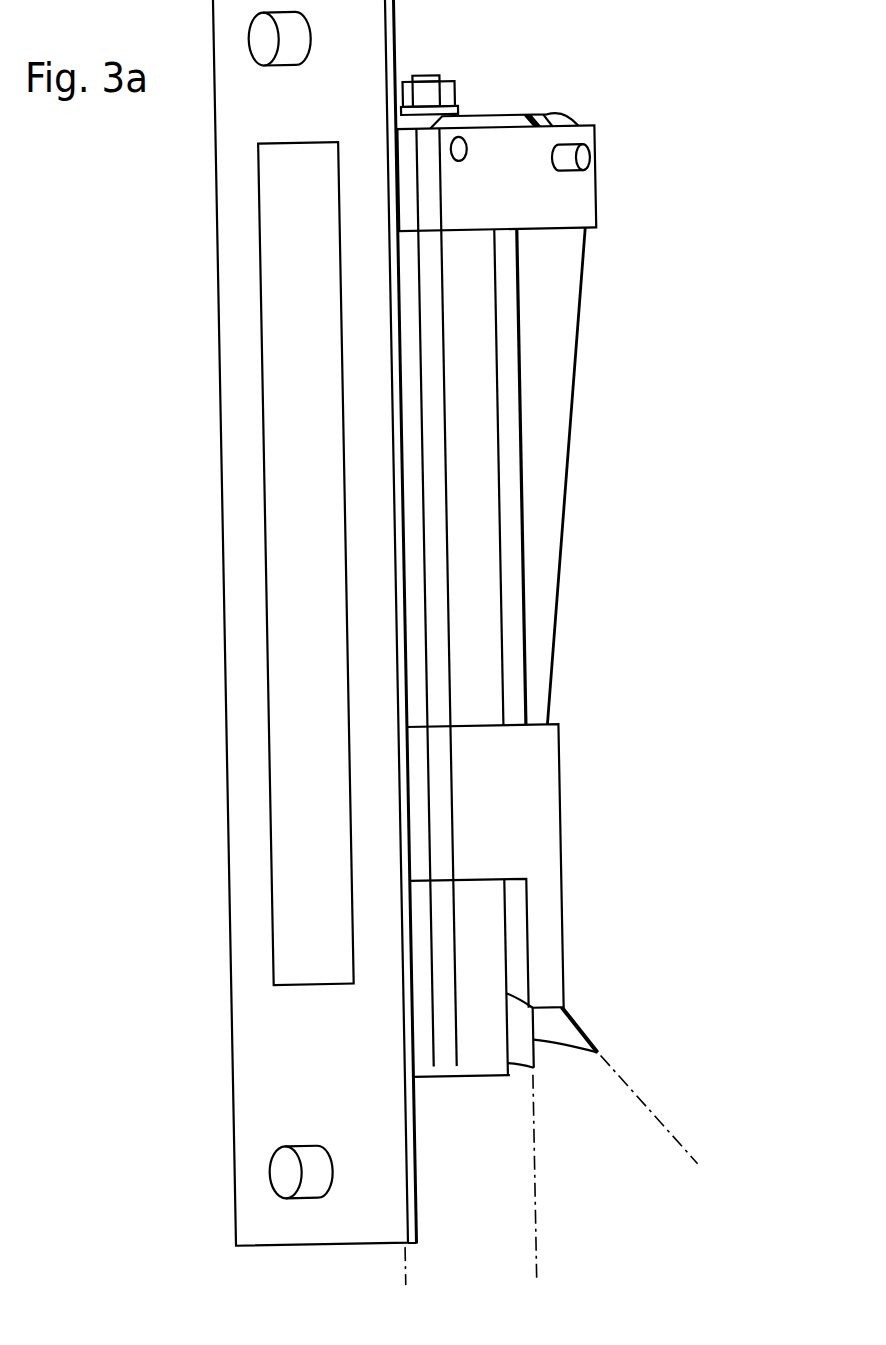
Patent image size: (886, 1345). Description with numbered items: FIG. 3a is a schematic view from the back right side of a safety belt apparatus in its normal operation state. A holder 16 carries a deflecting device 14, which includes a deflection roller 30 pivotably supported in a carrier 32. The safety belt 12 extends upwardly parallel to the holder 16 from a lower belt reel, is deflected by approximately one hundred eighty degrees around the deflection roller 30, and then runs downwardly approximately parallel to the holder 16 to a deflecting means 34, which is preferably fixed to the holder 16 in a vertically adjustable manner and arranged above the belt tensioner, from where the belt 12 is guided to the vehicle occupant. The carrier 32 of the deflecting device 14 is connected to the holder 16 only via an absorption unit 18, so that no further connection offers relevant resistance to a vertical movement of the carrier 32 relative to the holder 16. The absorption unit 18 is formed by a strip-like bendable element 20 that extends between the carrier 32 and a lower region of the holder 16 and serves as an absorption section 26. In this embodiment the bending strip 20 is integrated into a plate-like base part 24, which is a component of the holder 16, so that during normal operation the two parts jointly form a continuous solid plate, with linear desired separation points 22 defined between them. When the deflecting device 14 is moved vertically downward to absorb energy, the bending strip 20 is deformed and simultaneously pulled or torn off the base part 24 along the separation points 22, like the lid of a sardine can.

The safety belt 12 is at (580, 364).
The deflecting device 14 is at (523, 556).
The holder 16 is at (266, 623).
The absorption unit 18 is at (98, 692).
The strip-like bendable element 20 is at (229, 605).
The linear desired separation points 22 is at (343, 413).
The plate-like base part 24 is at (246, 713).
The absorption section 26 is at (290, 771).
The deflection roller 30 is at (588, 160).
The carrier 32 is at (580, 198).
The deflecting means 34 is at (532, 793).